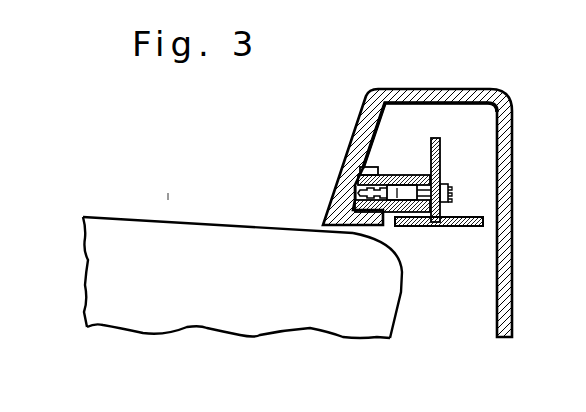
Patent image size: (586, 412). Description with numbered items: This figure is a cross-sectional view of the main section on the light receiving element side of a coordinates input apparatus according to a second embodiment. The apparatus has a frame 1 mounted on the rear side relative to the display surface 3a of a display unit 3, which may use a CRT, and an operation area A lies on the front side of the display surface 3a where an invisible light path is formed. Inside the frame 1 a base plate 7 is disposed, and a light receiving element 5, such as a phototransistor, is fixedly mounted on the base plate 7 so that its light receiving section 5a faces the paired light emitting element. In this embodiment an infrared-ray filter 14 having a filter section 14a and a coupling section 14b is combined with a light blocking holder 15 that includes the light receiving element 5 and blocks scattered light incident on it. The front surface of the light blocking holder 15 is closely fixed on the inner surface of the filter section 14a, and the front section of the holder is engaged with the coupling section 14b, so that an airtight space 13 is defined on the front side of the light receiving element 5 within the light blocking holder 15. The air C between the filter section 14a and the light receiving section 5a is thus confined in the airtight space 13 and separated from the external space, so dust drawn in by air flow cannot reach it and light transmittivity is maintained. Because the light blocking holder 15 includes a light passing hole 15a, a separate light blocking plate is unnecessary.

The frame 1 is at (512, 125).
The display unit 3 is at (87, 268).
The display surface 3a is at (118, 215).
The light receiving element 5 is at (397, 217).
The light receiving section 5a is at (398, 188).
The base plate 7 is at (442, 148).
The airtight space 13 is at (390, 186).
The infrared-ray filter 14 is at (355, 180).
The filter section 14a is at (345, 206).
The coupling section 14b is at (370, 167).
The light blocking holder 15 is at (447, 188).
The light passing hole 15a is at (357, 192).
The operation area A is at (168, 193).
The air C is at (345, 187).